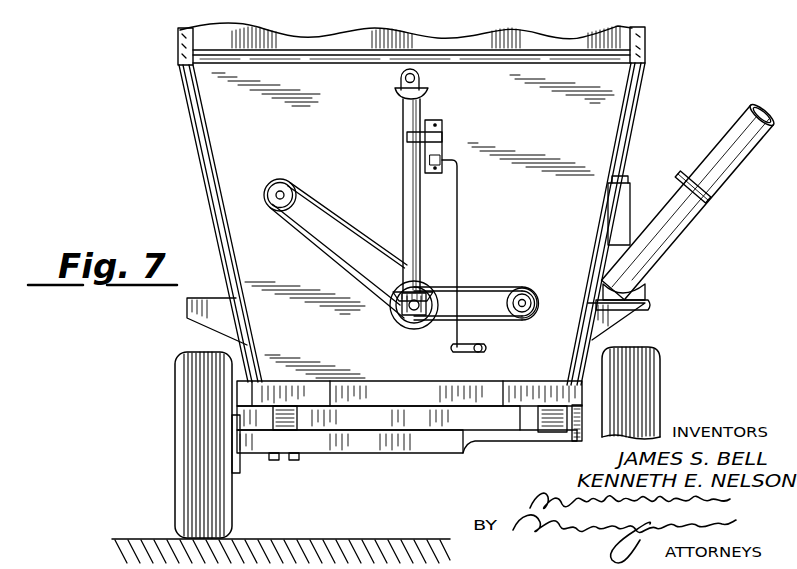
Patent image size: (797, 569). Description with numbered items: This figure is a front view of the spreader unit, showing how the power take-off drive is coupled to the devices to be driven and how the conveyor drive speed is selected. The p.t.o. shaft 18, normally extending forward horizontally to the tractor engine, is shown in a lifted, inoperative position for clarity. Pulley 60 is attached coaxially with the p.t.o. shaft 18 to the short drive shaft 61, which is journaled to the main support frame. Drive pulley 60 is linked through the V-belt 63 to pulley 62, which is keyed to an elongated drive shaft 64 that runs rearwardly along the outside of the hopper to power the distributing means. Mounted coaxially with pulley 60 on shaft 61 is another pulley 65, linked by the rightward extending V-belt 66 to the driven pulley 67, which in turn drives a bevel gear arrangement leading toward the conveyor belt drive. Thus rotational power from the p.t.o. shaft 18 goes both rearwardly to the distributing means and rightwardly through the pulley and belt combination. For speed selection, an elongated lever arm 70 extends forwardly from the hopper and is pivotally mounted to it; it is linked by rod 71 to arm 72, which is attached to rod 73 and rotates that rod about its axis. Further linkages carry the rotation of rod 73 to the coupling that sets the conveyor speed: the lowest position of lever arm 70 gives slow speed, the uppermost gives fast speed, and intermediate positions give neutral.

The p.t.o. shaft 18 is at (402, 133).
The drive pulley 60 is at (400, 284).
The short drive shaft 61 is at (410, 311).
The pulley 62 is at (298, 203).
The V-belt 63 is at (302, 236).
The elongated drive shaft 64 is at (278, 179).
The pulley 65 is at (424, 317).
The V-belt 66 is at (468, 287).
The driven pulley 67 is at (505, 293).
The lever arm 70 is at (443, 126).
The rod 71 is at (459, 195).
The arm 72 is at (470, 353).
The rod 73 is at (487, 346).